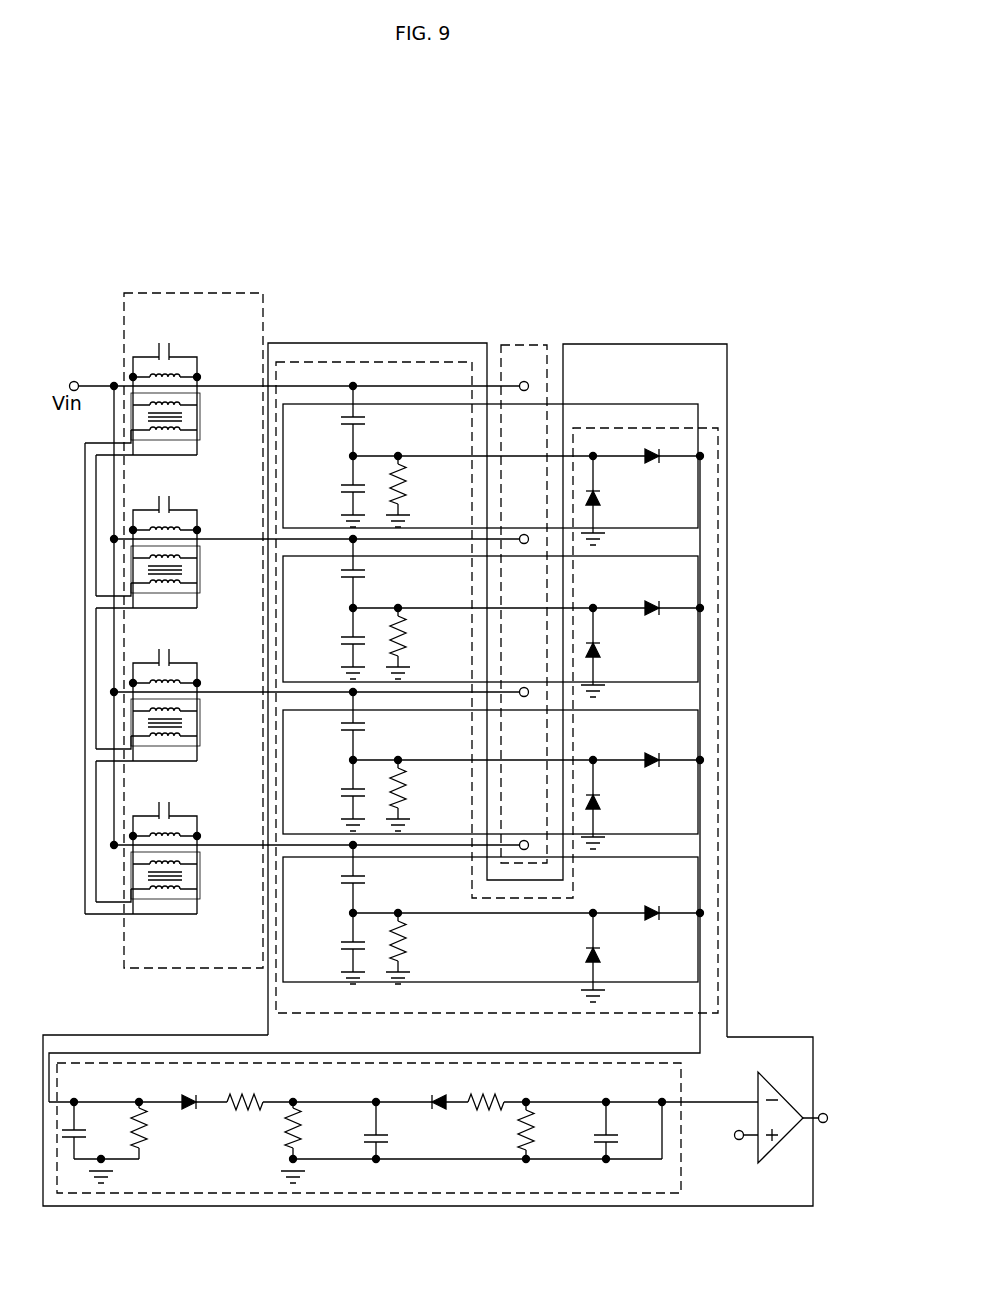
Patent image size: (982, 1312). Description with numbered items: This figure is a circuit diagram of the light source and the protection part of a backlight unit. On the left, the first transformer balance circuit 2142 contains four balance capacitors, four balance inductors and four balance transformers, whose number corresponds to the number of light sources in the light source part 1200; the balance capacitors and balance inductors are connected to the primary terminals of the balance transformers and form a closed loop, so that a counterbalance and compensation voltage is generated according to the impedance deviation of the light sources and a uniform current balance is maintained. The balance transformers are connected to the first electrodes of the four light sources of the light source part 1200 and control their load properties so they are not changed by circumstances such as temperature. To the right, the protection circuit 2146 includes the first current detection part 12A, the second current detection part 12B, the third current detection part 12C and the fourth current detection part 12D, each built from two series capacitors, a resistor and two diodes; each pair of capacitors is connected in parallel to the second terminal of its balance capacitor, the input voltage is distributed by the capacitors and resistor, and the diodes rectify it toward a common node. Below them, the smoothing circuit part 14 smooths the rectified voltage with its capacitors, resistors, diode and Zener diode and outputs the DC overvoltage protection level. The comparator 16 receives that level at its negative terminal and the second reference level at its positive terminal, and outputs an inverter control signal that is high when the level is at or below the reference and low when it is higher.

The first current detection part 12A is at (698, 414).
The second current detection part 12B is at (698, 572).
The third current detection part 12C is at (698, 728).
The fourth current detection part 12D is at (700, 920).
The smoothing circuit part 14 is at (405, 1193).
The comparator 16 is at (775, 1150).
The light source part 1200 is at (527, 343).
The first transformer balance circuit 2142 is at (232, 968).
The protection circuit 2146 is at (770, 1037).